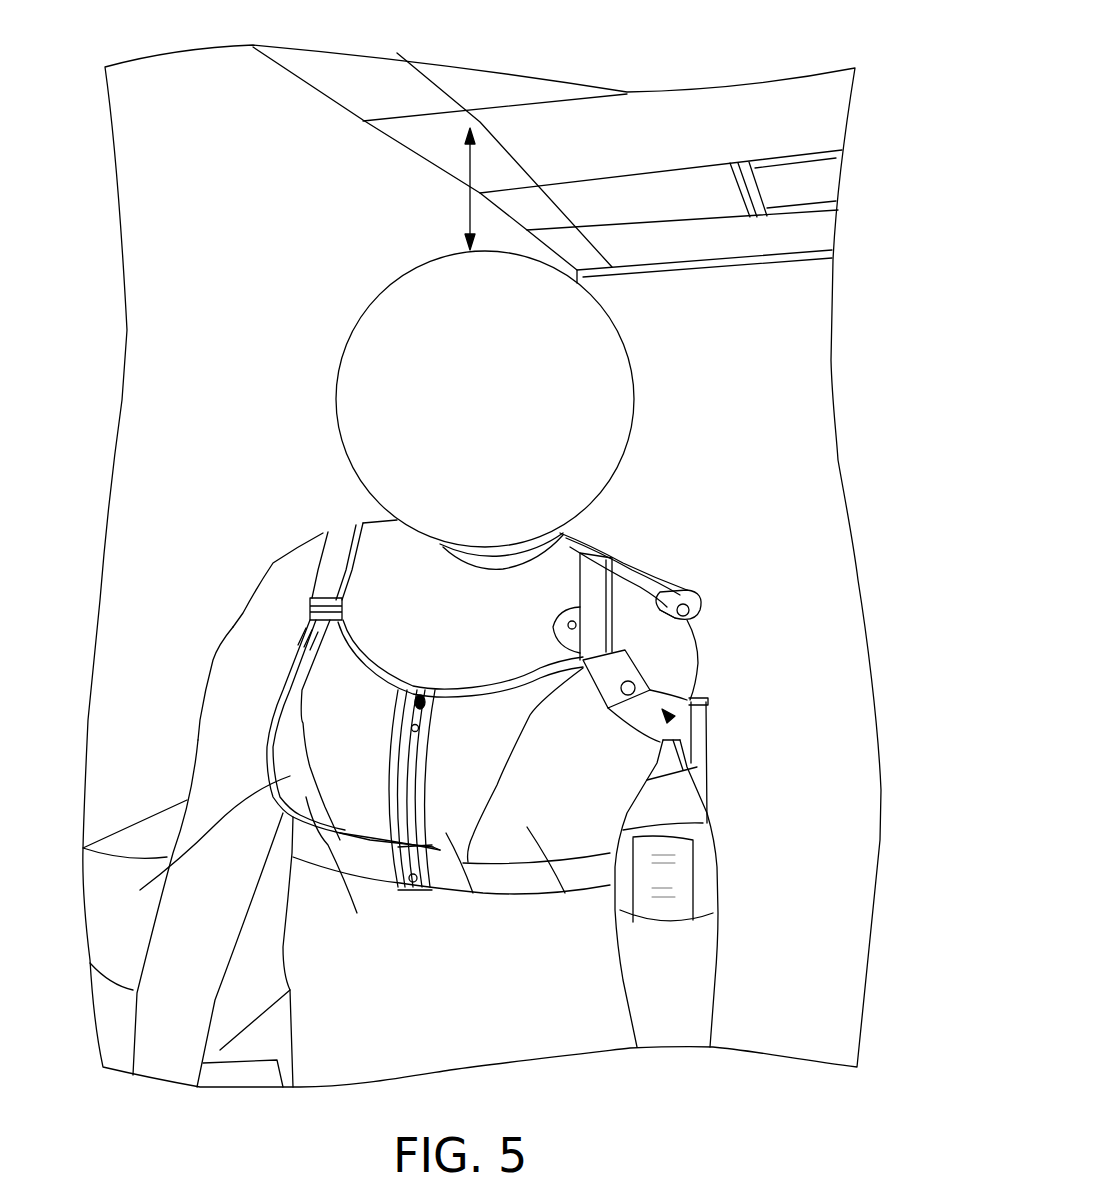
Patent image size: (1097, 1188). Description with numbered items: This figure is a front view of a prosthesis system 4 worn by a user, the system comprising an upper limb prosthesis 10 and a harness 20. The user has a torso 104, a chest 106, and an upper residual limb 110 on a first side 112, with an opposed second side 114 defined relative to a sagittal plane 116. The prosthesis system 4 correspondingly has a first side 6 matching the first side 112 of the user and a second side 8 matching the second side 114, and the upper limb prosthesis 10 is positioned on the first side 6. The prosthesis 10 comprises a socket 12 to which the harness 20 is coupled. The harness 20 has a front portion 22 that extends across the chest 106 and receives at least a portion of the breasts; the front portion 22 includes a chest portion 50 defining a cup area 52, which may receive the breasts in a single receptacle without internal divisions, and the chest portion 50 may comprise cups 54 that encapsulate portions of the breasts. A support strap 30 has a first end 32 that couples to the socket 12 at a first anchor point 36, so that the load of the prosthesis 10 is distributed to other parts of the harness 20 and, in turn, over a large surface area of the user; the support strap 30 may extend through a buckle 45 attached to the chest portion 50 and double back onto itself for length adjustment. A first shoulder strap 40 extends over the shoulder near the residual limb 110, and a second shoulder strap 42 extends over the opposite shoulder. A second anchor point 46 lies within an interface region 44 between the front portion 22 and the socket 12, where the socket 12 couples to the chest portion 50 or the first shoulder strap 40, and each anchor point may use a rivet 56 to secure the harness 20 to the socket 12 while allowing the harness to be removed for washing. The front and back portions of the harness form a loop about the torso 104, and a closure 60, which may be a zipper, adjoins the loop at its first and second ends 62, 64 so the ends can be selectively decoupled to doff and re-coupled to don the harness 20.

The prosthesis system 4 is at (156, 610).
The first side 6 is at (674, 454).
The second side 8 is at (132, 490).
The upper limb prosthesis 10 is at (680, 807).
The socket 12 is at (700, 660).
The harness 20 is at (307, 633).
The front portion 22 is at (170, 883).
The support strap 30 is at (637, 557).
The first end 32 is at (731, 609).
The first anchor point 36 is at (710, 607).
The first shoulder strap 40 is at (593, 610).
The second shoulder strap 42 is at (357, 565).
The interface region 44 is at (707, 705).
The buckle 45 is at (310, 607).
The second anchor point 46 is at (690, 700).
The chest portion 50 is at (473, 893).
The cup area 52 is at (357, 913).
The cups 54 is at (565, 893).
The rivet 56 is at (583, 693).
The closure 60 is at (410, 695).
The first end 62 is at (397, 758).
The second end 64 is at (432, 778).
The torso 104 is at (256, 917).
The chest 106 is at (246, 713).
The upper residual limb 110 is at (633, 519).
The first side 112 is at (683, 183).
The second side 114 is at (237, 193).
The sagittal plane 116 is at (470, 210).